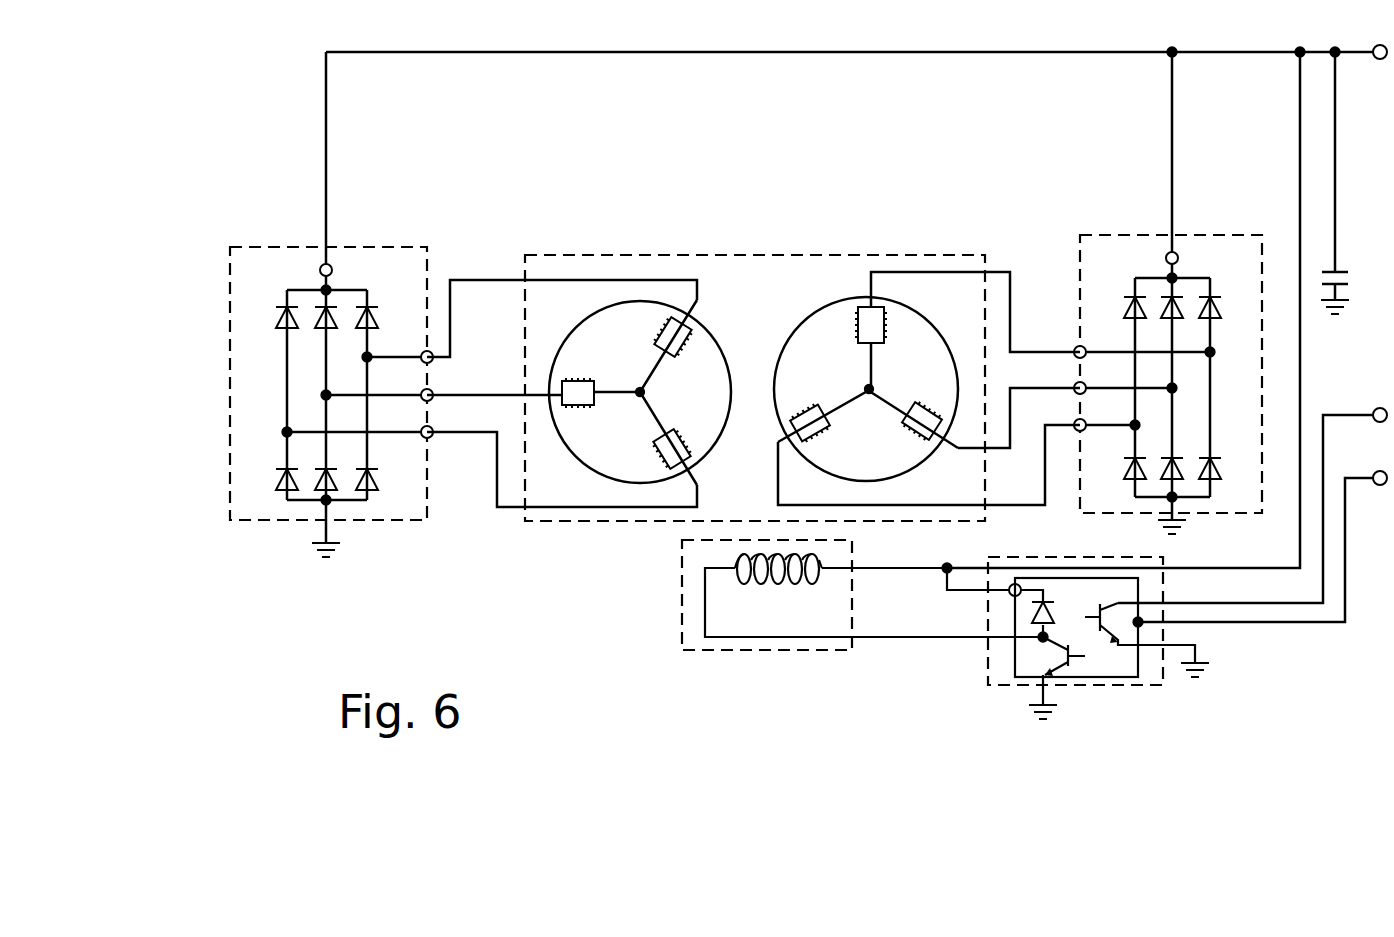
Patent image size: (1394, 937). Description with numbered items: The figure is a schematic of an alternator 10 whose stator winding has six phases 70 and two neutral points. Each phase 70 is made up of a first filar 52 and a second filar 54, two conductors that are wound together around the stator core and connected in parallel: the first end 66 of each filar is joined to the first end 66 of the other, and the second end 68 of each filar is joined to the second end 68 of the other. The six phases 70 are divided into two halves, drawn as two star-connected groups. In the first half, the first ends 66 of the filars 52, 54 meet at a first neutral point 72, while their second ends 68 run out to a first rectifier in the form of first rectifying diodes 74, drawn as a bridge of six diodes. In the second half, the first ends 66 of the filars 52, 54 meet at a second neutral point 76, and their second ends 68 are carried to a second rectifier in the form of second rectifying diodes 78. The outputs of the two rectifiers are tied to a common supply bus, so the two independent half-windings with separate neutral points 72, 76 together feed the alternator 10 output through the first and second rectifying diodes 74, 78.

The electric machine 10 is at (634, 251).
The first filar 52 is at (655, 337).
The second filar 54 is at (553, 380).
The first end 66 is at (620, 370).
The second end 68 is at (510, 395).
The phase 70 is at (560, 390).
The first neutral point 72 is at (637, 396).
The first rectifying diodes 74 is at (224, 240).
The second neutral point 76 is at (866, 386).
The second rectifying diodes 78 is at (1268, 418).